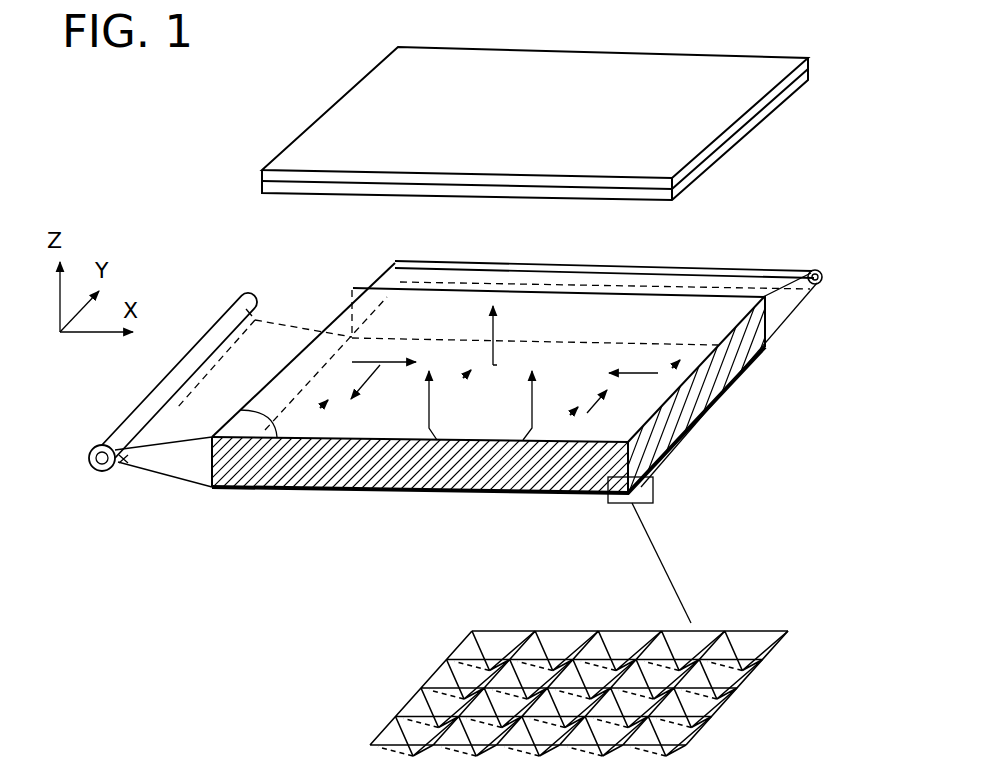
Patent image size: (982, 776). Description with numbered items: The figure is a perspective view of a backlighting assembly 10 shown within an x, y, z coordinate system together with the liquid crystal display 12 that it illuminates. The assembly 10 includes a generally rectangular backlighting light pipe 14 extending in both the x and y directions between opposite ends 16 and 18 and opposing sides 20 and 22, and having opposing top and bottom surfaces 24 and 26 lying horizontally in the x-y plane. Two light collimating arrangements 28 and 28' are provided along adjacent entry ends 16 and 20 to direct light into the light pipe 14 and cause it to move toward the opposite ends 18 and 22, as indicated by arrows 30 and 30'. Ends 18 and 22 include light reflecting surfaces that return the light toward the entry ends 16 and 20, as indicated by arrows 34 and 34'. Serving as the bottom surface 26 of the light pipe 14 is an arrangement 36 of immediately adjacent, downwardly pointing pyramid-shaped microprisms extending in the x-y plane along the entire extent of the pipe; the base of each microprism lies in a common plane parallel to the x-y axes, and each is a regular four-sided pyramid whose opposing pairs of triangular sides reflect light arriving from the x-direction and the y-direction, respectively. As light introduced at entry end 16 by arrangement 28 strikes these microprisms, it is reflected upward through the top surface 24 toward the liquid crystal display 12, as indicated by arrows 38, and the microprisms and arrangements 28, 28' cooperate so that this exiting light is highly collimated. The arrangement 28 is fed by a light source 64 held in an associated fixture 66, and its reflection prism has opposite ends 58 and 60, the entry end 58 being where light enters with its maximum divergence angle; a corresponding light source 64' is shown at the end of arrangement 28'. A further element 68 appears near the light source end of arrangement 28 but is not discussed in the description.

The backlighting assembly 10 is at (271, 270).
The liquid crystal display 12 is at (303, 107).
The backlighting light pipe 14 is at (658, 382).
The entry end of light pipe 16 is at (280, 438).
The opposite end of light pipe 18 is at (648, 403).
The entry side of light pipe 20 is at (725, 295).
The opposite side of light pipe 22 is at (545, 440).
The top surface of light pipe 24 is at (380, 438).
The bottom surface of light pipe 26 is at (405, 487).
The light collimating arrangement 28 is at (195, 364).
The light collimating arrangement 28' is at (561, 249).
The arrow indicating light movement 30 is at (384, 350).
The arrow indicating light movement 30' is at (371, 391).
The arrow indicating reflected light 34 is at (632, 359).
The arrow indicating reflected light 34' is at (607, 409).
The arrangement of pyramid microprisms 36 is at (553, 638).
The arrows indicating exiting light 38 is at (515, 440).
The entry end of arrangement 58 is at (130, 468).
The opposite end of prism 60 is at (210, 467).
The light source 64 is at (77, 455).
The light source 64' is at (731, 352).
The fixture 66 is at (120, 432).
The roller axle 68 is at (107, 470).